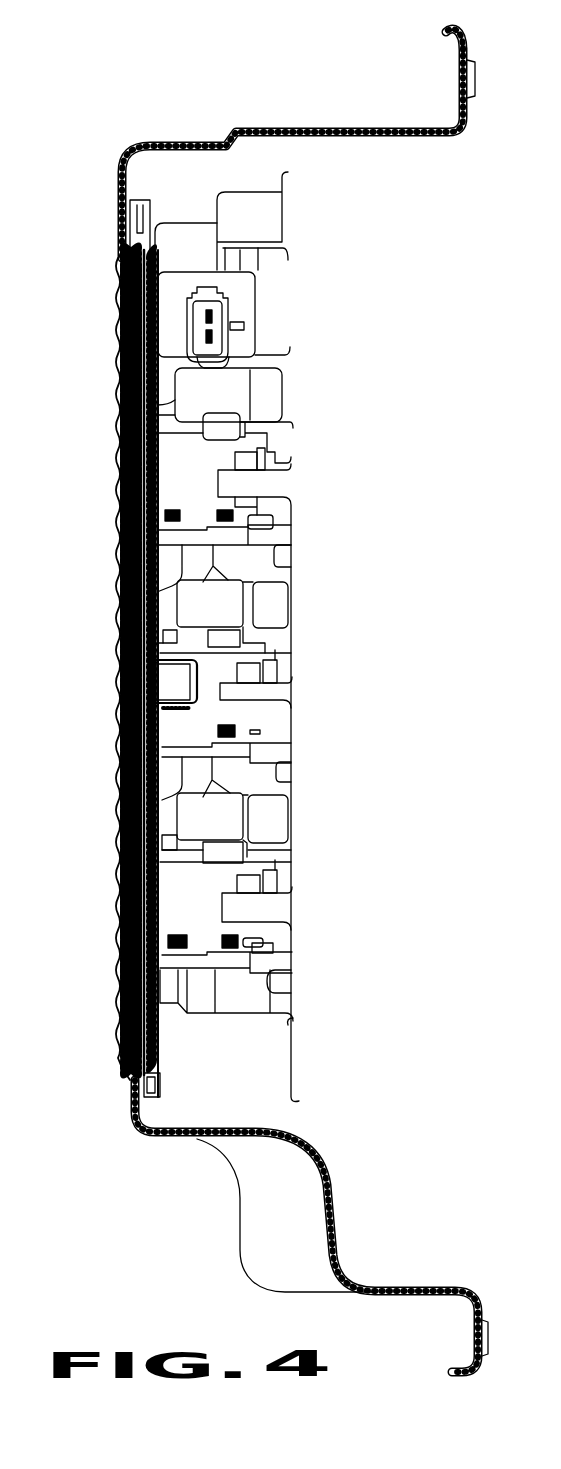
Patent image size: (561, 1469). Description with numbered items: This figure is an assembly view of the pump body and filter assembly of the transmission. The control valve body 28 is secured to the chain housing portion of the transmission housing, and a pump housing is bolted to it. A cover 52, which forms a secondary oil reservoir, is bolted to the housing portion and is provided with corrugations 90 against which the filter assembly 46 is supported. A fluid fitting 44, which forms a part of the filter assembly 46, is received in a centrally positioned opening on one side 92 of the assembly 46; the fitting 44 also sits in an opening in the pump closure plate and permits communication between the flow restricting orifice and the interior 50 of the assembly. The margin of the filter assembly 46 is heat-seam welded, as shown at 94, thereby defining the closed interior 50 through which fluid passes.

The control valve body 28 is at (207, 404).
The fluid fitting 44 is at (162, 660).
The filter assembly 46 is at (112, 452).
The interior 50 is at (122, 902).
The cover 52 is at (150, 1136).
The corrugations 90 is at (132, 811).
The side 92 is at (153, 740).
The heat-seam weld 94 is at (128, 1092).